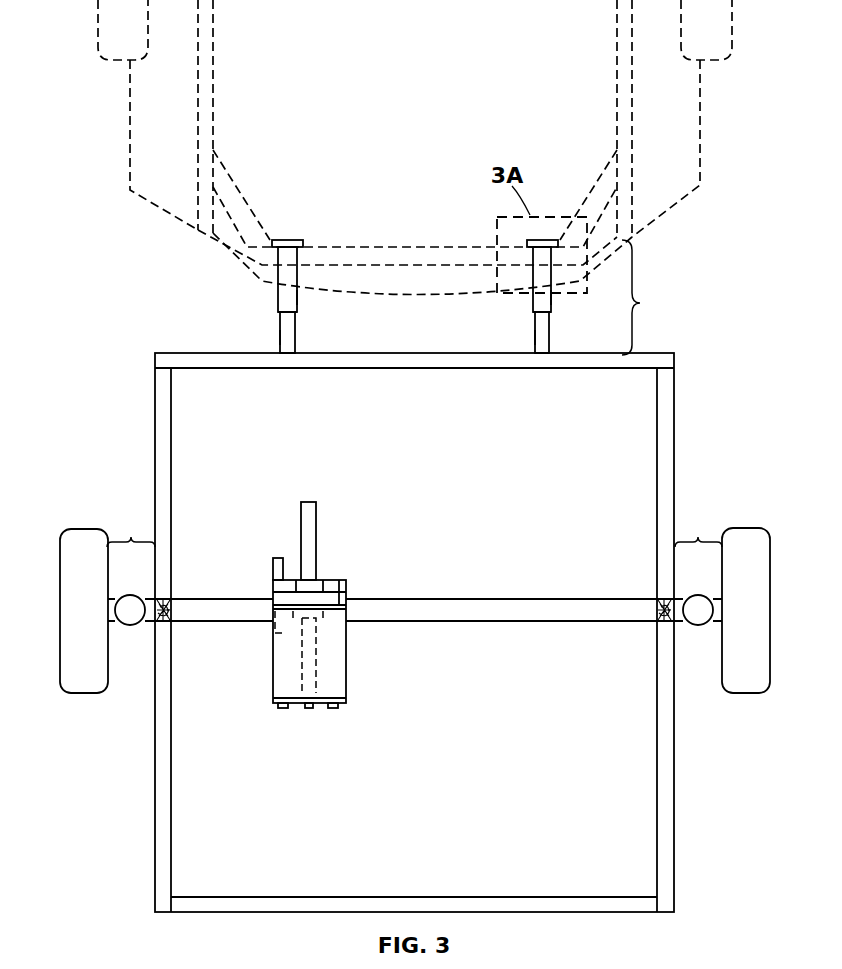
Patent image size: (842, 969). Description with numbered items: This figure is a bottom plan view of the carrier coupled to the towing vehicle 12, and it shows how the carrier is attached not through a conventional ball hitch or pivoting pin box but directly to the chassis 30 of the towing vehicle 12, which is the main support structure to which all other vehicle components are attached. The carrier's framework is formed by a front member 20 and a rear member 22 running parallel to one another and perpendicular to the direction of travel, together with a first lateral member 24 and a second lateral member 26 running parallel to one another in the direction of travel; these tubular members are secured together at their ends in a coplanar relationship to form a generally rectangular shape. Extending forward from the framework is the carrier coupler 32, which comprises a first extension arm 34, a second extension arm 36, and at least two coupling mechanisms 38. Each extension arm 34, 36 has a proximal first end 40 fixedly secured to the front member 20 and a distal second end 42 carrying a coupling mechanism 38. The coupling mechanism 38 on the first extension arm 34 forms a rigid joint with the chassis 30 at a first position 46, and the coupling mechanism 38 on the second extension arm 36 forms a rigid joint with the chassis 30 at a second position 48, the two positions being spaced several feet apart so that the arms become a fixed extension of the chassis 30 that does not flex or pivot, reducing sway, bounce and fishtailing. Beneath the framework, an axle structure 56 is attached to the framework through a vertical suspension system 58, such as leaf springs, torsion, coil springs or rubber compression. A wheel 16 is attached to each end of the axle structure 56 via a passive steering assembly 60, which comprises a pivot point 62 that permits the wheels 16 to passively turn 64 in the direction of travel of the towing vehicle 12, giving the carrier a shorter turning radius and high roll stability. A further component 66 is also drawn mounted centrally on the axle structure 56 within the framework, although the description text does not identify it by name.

The towing vehicle 12 is at (424, 104).
The wheel 16 is at (83, 665).
The front member 20 is at (405, 356).
The rear member 22 is at (575, 906).
The first lateral member 24 is at (665, 445).
The second lateral member 26 is at (165, 445).
The chassis 30 is at (205, 198).
The carrier coupler 32 is at (648, 297).
The first extension arm 34 is at (546, 340).
The second extension arm 36 is at (291, 340).
The coupling mechanism 38 is at (297, 300).
The proximal first end 40 is at (280, 356).
The distal second end 42 is at (279, 312).
The first position 46 is at (553, 240).
The second position 48 is at (289, 240).
The axle structure 56 is at (414, 602).
The vertical suspension system 58 is at (170, 602).
The passive steering assembly 60 is at (414, 526).
The pivot point 62 is at (138, 624).
The passive turn 64 is at (74, 511).
The motor 66 is at (311, 502).